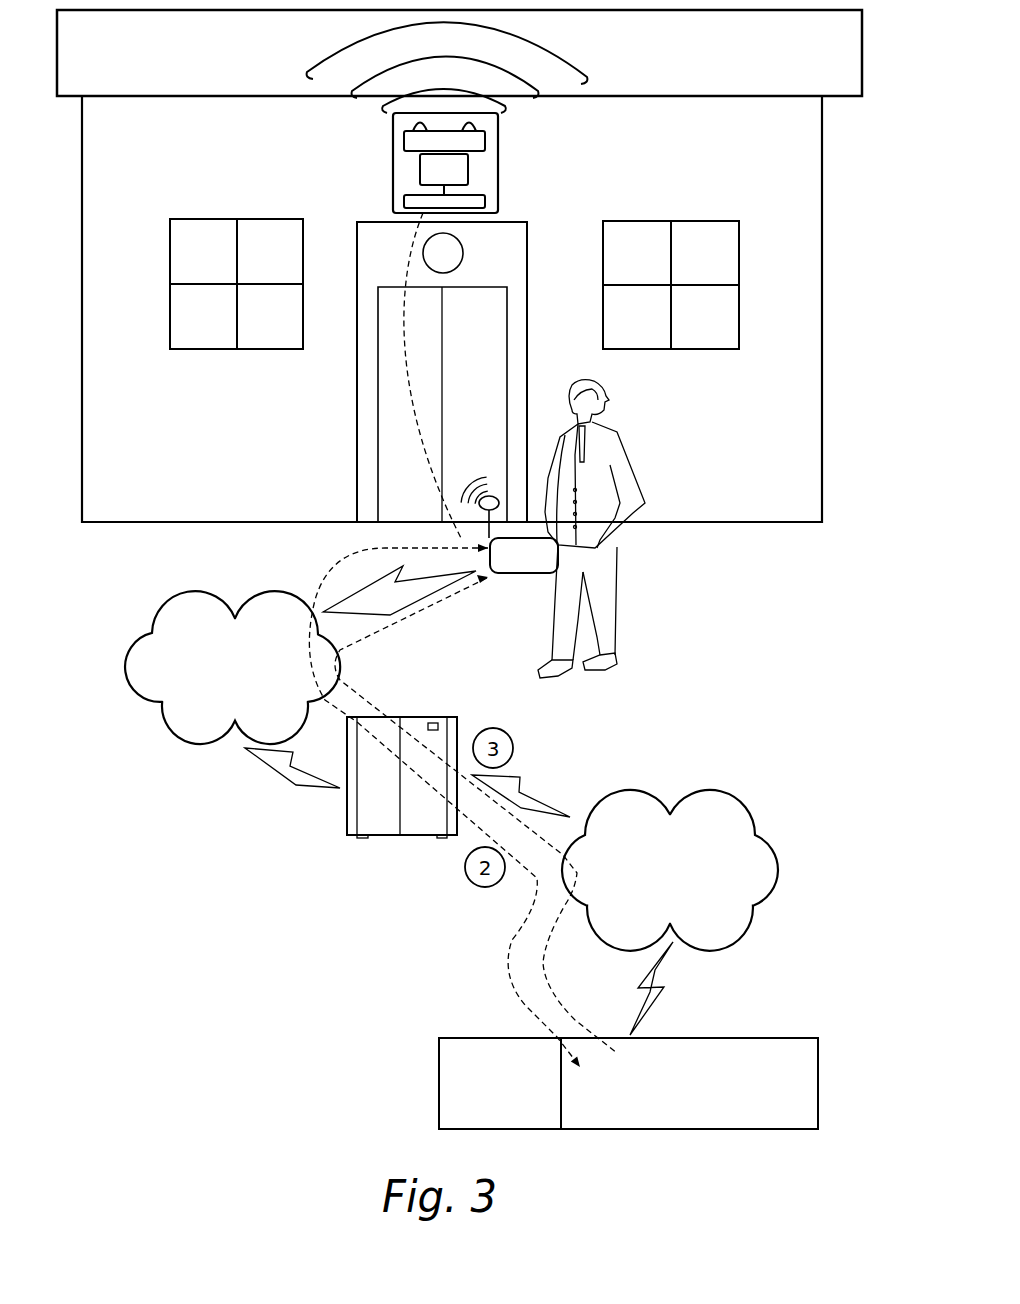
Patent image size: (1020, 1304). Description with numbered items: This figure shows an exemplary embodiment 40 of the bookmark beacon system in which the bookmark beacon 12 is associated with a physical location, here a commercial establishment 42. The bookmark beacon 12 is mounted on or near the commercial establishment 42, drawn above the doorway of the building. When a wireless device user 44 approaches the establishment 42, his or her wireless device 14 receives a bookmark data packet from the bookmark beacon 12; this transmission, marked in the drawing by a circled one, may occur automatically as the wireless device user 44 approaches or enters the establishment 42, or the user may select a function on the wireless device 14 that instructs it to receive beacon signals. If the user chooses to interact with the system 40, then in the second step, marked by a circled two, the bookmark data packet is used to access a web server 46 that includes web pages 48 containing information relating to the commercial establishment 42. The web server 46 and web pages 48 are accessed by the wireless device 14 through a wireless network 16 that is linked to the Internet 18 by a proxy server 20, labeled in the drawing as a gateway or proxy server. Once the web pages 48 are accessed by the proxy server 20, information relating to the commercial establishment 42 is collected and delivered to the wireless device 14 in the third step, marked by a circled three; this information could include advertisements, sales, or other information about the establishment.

The bookmark beacon 12 is at (498, 162).
The wireless device 14 is at (523, 573).
The wireless network 16 is at (137, 636).
The Internet 18 is at (775, 848).
The proxy server 20 is at (347, 802).
The exemplary embodiment 40 is at (235, 918).
The commercial establishment 42 is at (748, 522).
The wireless device user 44 is at (632, 557).
The web server 46 is at (439, 1060).
The web pages 48 is at (712, 1038).